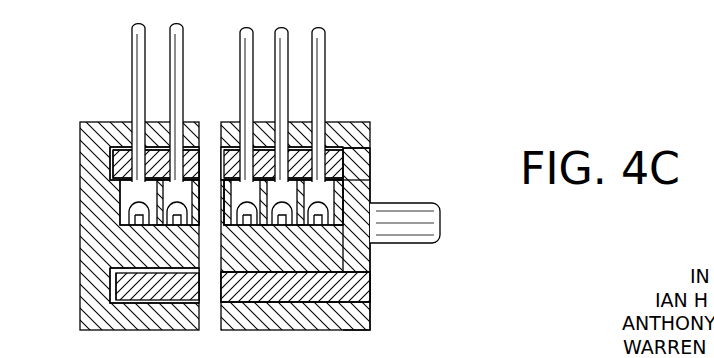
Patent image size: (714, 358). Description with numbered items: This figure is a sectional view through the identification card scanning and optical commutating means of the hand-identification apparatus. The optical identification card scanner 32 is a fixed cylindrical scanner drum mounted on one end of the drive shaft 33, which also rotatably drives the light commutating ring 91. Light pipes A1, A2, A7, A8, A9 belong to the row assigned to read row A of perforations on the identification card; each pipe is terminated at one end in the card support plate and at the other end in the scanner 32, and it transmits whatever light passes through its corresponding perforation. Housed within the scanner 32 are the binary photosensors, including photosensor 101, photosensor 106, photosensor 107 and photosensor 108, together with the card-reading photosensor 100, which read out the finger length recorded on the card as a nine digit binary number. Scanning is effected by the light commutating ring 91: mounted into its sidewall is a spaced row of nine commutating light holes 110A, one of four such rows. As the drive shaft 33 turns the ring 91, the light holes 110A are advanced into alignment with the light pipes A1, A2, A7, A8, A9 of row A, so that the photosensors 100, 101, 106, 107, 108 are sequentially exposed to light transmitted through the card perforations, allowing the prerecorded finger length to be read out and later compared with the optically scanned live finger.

The optical identification card scanner 32 is at (372, 122).
The drive shaft 33 is at (423, 203).
The light commutating ring 91 is at (372, 178).
The card-reading photosensor 100 is at (125, 226).
The binary photosensor 101 is at (172, 225).
The binary photosensor 106 is at (247, 228).
The binary photosensor 107 is at (283, 228).
The binary photosensor 108 is at (372, 200).
The commutating light holes 110A is at (115, 167).
The light pipe A1 is at (139, 91).
The light pipe A2 is at (176, 91).
The light pipe A7 is at (248, 91).
The light pipe A8 is at (283, 91).
The light pipe A9 is at (318, 91).